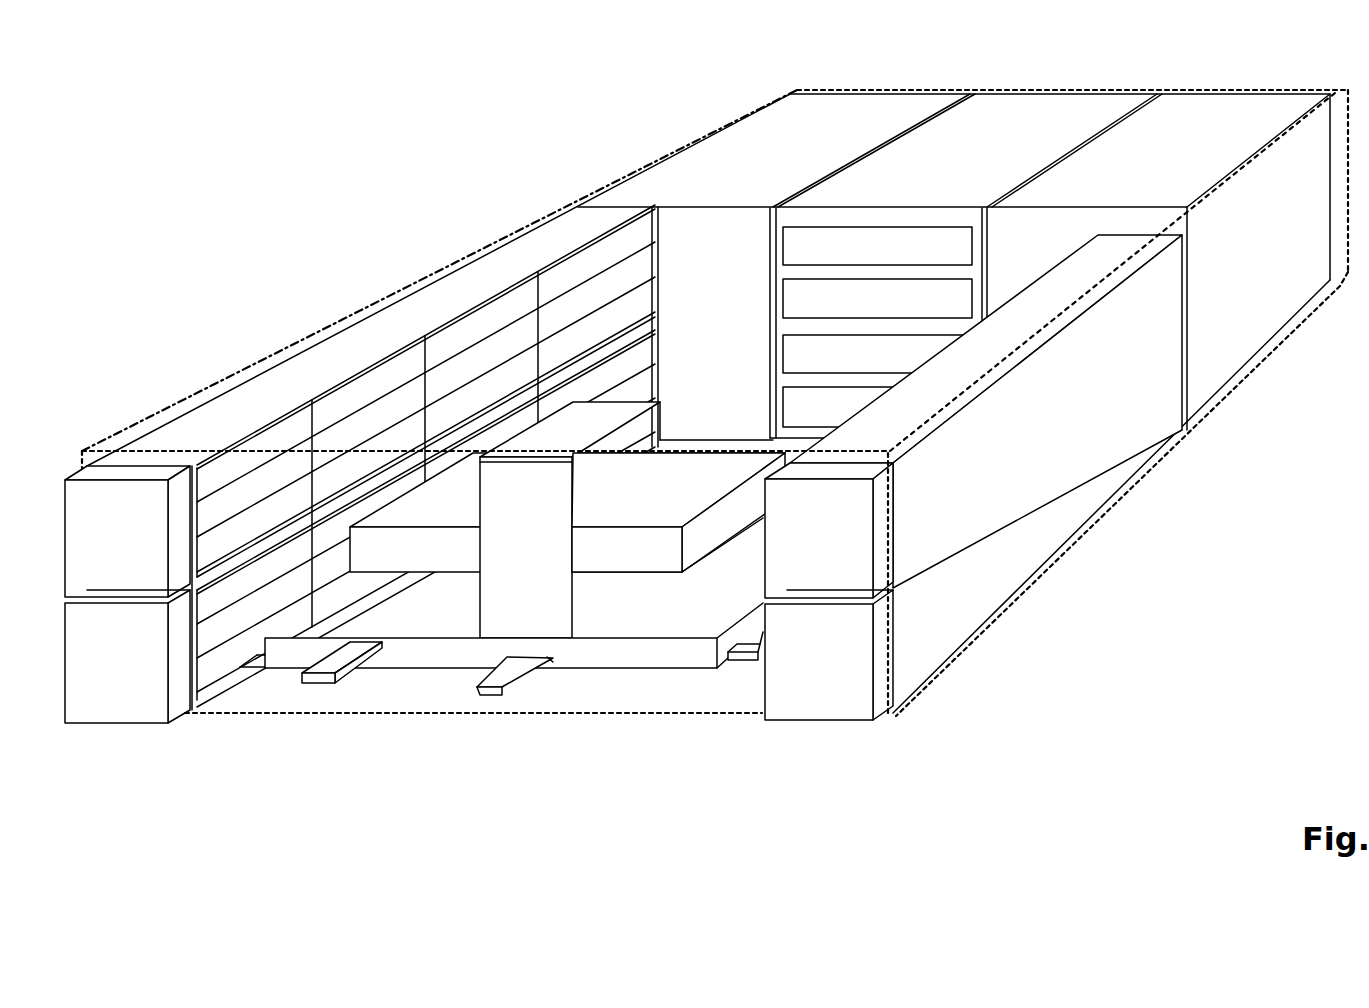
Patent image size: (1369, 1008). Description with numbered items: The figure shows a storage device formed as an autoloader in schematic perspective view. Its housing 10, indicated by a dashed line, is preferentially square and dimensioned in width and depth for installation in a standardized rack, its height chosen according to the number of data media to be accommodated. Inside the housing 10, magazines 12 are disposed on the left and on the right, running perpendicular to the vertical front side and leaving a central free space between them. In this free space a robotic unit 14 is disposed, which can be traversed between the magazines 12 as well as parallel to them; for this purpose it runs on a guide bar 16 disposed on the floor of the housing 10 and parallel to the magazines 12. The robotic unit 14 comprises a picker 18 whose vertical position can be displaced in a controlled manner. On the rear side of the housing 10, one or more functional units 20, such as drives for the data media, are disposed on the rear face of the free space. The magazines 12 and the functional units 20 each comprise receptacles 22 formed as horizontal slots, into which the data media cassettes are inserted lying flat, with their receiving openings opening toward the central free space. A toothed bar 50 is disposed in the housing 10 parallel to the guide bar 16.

The housing 10 is at (617, 712).
The magazine 12 is at (88, 500).
The robotic unit 14 is at (460, 652).
The guide bar 16 is at (487, 697).
The picker 18 is at (393, 558).
The functional unit 20 is at (827, 217).
The receptacle 22 is at (238, 460).
The toothed bar 50 is at (331, 675).